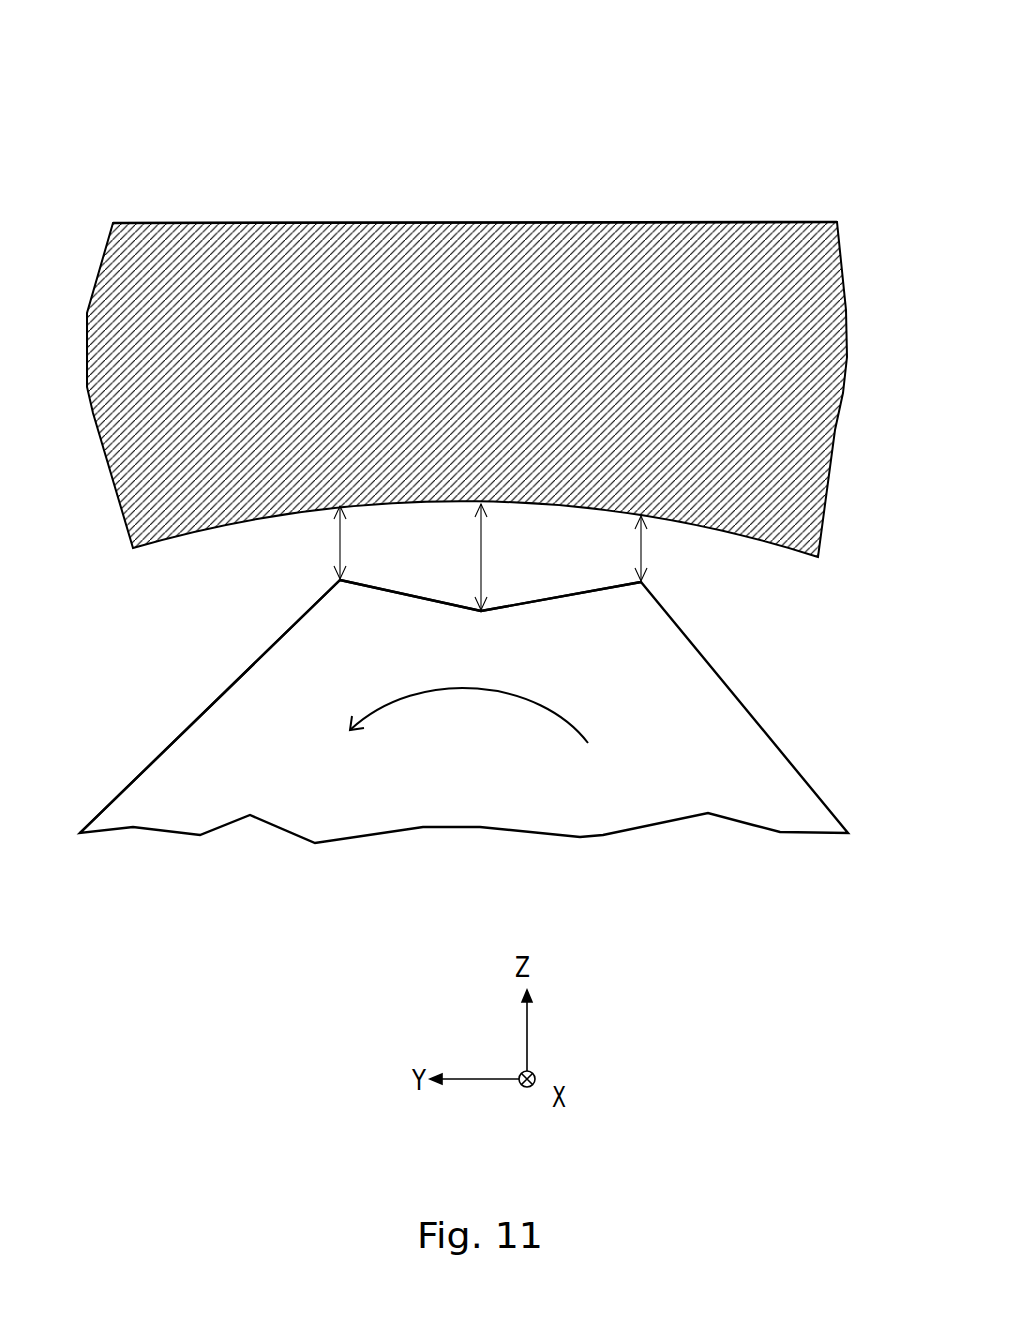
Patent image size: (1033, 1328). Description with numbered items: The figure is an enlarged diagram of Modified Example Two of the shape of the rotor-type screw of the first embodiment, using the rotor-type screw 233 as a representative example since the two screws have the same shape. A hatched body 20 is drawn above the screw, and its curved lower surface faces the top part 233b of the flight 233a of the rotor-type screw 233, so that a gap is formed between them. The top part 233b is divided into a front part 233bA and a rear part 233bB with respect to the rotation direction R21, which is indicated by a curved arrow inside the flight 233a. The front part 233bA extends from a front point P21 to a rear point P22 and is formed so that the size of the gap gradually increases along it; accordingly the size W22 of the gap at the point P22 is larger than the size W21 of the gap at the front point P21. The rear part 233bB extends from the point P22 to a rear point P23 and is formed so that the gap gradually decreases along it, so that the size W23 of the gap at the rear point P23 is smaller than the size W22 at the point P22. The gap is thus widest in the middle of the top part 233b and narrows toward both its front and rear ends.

The rotor-type screw casing wall 20 is at (177, 226).
The rotor-type screw 233 is at (198, 893).
The flight 233a is at (327, 588).
The top part 233b is at (677, 62).
The front part 233bA is at (421, 599).
The rear part 233bB is at (612, 590).
The front point P21 is at (338, 578).
The rear point P22 is at (485, 608).
The rear point P23 is at (644, 584).
The size of the gap at the front point W21 is at (363, 542).
The size of the gap at the rear point W22 is at (502, 557).
The size of the gap at the rear point W23 is at (664, 548).
The rotation direction R21 is at (469, 715).